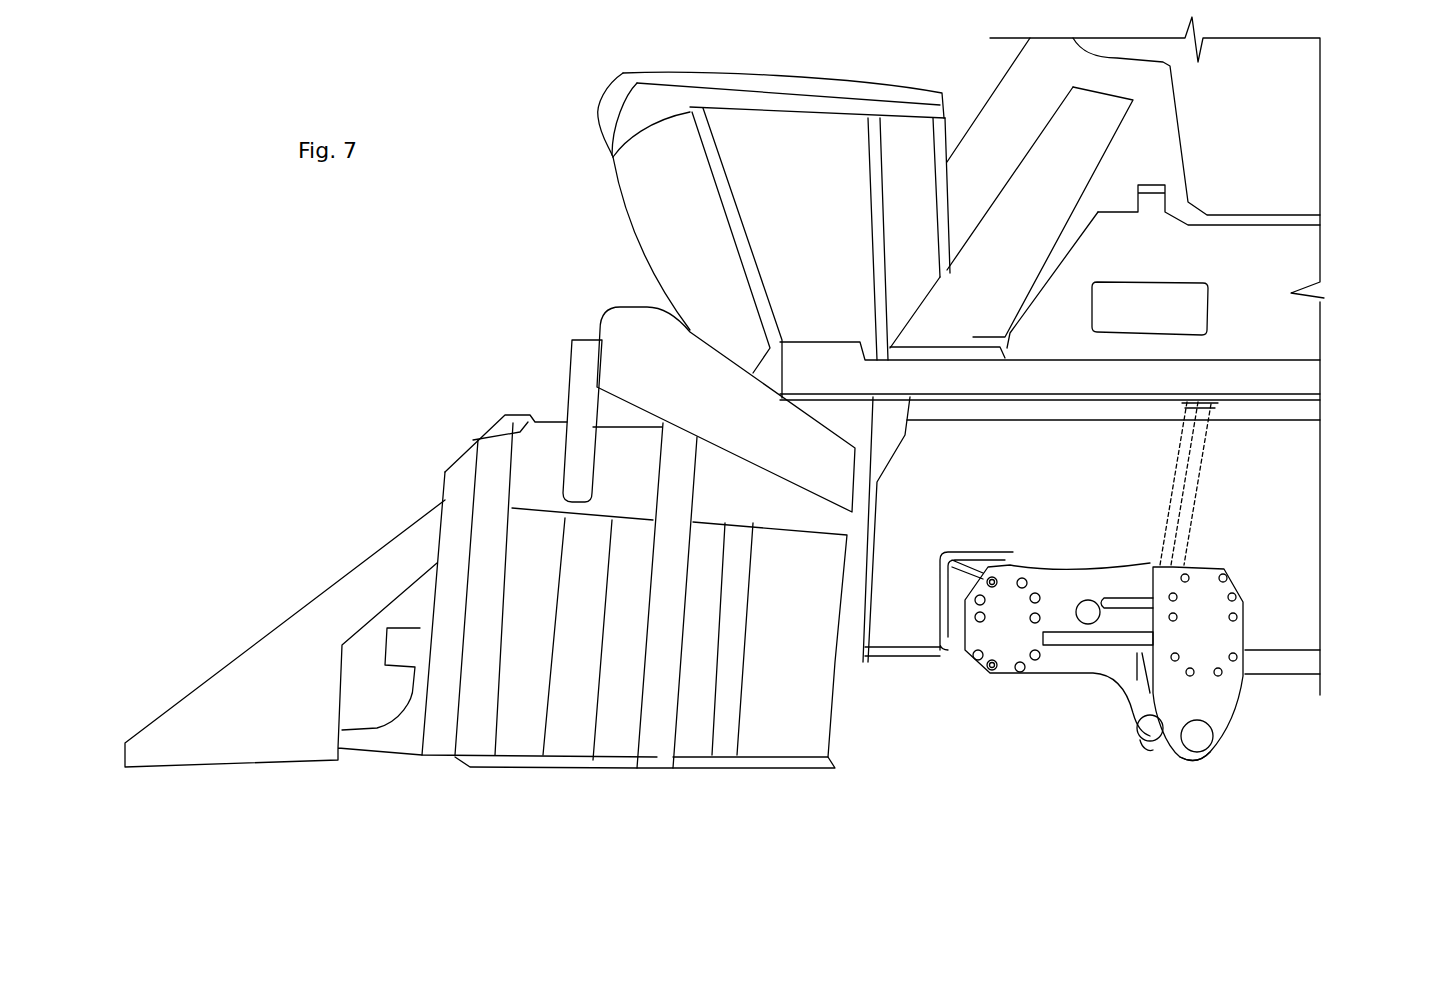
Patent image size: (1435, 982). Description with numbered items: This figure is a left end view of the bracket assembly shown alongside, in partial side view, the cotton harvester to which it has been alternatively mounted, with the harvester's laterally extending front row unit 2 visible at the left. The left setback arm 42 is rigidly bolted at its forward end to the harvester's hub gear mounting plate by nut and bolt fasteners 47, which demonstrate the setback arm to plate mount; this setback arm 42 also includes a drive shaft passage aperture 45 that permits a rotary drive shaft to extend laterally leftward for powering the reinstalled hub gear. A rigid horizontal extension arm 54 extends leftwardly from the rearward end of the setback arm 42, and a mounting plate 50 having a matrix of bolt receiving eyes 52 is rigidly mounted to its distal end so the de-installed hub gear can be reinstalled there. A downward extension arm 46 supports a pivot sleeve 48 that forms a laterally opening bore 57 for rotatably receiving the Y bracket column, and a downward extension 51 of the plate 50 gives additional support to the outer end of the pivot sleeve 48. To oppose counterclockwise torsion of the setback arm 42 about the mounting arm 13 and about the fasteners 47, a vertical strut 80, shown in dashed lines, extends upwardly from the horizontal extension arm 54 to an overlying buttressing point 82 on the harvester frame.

The front row unit 2 is at (487, 507).
The rigid mounting arm 13 is at (957, 617).
The left setback arm 42 is at (1068, 587).
The drive shaft passage aperture 45 is at (1088, 615).
The downward extension arm 46 is at (1152, 748).
The nut and bolt fasteners 47 is at (997, 675).
The pivot sleeve 48 is at (1157, 732).
The mounting plate 50 is at (1210, 634).
The downward extension of plate 51 is at (1195, 758).
The bolt receiving eyes 52 is at (1217, 669).
The horizontal extension arm 54 is at (1160, 578).
The bore 57 is at (1200, 734).
The vertical strut 80 is at (1195, 489).
The buttressing point 82 is at (1210, 404).